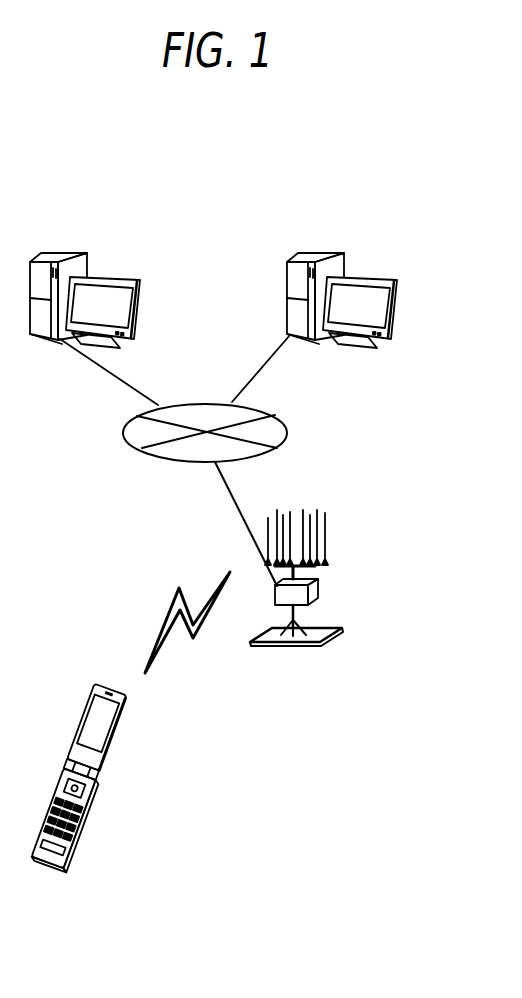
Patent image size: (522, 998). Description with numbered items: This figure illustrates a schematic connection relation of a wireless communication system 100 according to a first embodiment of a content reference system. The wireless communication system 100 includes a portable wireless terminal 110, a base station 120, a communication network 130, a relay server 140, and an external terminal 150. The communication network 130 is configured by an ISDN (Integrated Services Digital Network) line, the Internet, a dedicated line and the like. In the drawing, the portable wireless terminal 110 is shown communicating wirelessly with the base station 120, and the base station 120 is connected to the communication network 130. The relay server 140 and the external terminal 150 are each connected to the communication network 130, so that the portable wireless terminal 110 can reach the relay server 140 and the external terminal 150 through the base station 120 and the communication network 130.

The wireless communication system 100 is at (212, 235).
The portable wireless terminal 110 is at (122, 721).
The base station 120 is at (318, 595).
The communication network 130 is at (123, 431).
The relay server 140 is at (82, 250).
The external terminal 150 is at (342, 250).